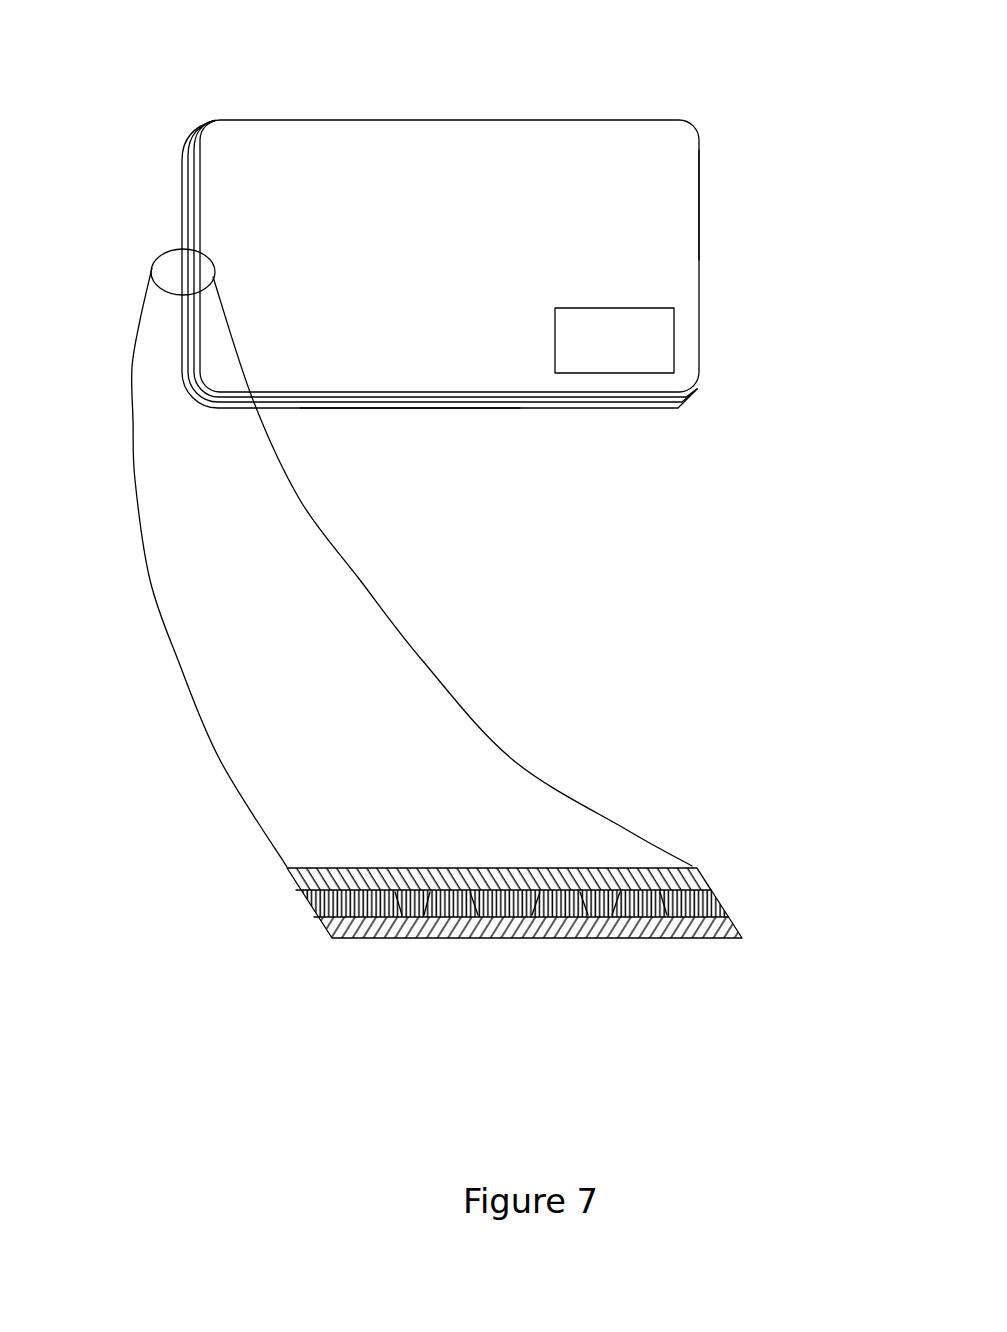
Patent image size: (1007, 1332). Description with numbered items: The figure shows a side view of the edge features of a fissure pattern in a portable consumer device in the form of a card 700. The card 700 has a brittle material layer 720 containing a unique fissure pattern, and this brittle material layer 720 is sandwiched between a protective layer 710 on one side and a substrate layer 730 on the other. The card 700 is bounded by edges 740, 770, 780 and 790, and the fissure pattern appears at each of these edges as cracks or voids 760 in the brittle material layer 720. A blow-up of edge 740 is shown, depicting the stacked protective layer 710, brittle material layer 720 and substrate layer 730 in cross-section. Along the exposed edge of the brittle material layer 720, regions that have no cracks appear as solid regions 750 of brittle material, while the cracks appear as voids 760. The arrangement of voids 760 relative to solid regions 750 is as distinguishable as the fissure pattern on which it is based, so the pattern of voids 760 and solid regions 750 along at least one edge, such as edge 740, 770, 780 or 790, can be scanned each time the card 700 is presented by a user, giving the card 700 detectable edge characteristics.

The card 700 is at (464, 221).
The protective layer 710 is at (223, 213).
The brittle material layer 720 is at (188, 172).
The substrate layer 730 is at (178, 210).
The edge 740 is at (160, 260).
The solid regions 750 is at (392, 917).
The voids 760 is at (592, 917).
The edge 770 is at (393, 120).
The edge 780 is at (400, 409).
The edge 790 is at (700, 192).